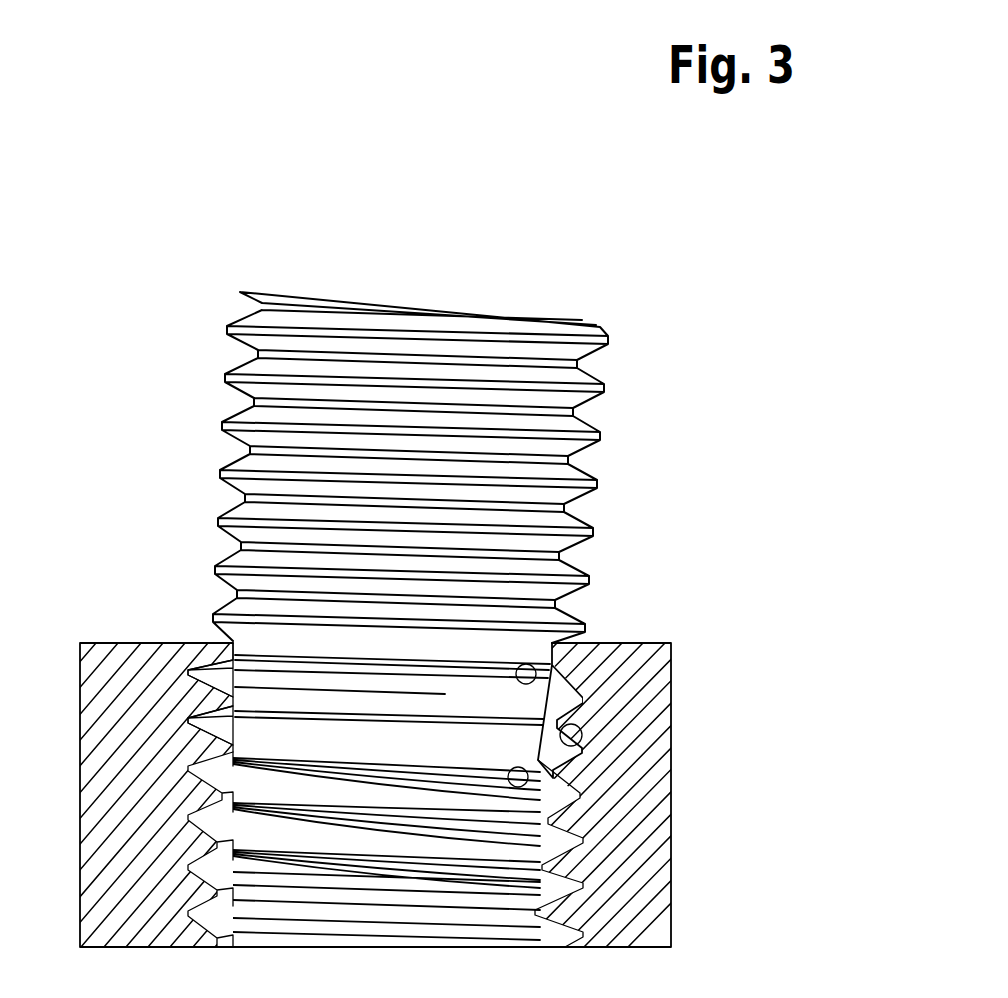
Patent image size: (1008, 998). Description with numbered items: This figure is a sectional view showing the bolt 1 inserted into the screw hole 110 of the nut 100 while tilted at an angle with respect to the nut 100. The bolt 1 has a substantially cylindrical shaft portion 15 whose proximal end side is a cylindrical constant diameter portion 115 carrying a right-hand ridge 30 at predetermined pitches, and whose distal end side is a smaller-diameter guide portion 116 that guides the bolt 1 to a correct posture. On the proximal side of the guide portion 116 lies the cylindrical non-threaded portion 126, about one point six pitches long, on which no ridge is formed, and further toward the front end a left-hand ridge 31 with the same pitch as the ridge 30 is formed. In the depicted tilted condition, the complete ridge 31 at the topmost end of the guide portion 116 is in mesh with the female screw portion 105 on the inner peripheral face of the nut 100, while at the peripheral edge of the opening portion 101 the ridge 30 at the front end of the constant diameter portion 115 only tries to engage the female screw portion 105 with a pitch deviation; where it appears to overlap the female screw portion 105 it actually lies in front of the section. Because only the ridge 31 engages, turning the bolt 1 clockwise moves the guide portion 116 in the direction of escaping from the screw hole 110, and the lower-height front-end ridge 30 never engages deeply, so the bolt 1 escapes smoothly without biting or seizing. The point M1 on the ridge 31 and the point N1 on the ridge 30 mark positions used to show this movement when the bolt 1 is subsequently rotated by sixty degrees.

The bolt 1 is at (663, 390).
The shaft portion 15 is at (598, 502).
The ridge 30 is at (579, 627).
The ridge 31 is at (535, 828).
The nut 100 is at (630, 642).
The opening portion 101 is at (205, 656).
The female screw portion 105 is at (578, 726).
The screw hole 110 is at (213, 668).
The constant diameter portion 115 is at (221, 490).
The guide portion 116 is at (532, 860).
The non-threaded portion 126 is at (182, 717).
The point on the ridge 30 N1 is at (540, 673).
The point on the ridge 31 M1 is at (532, 775).